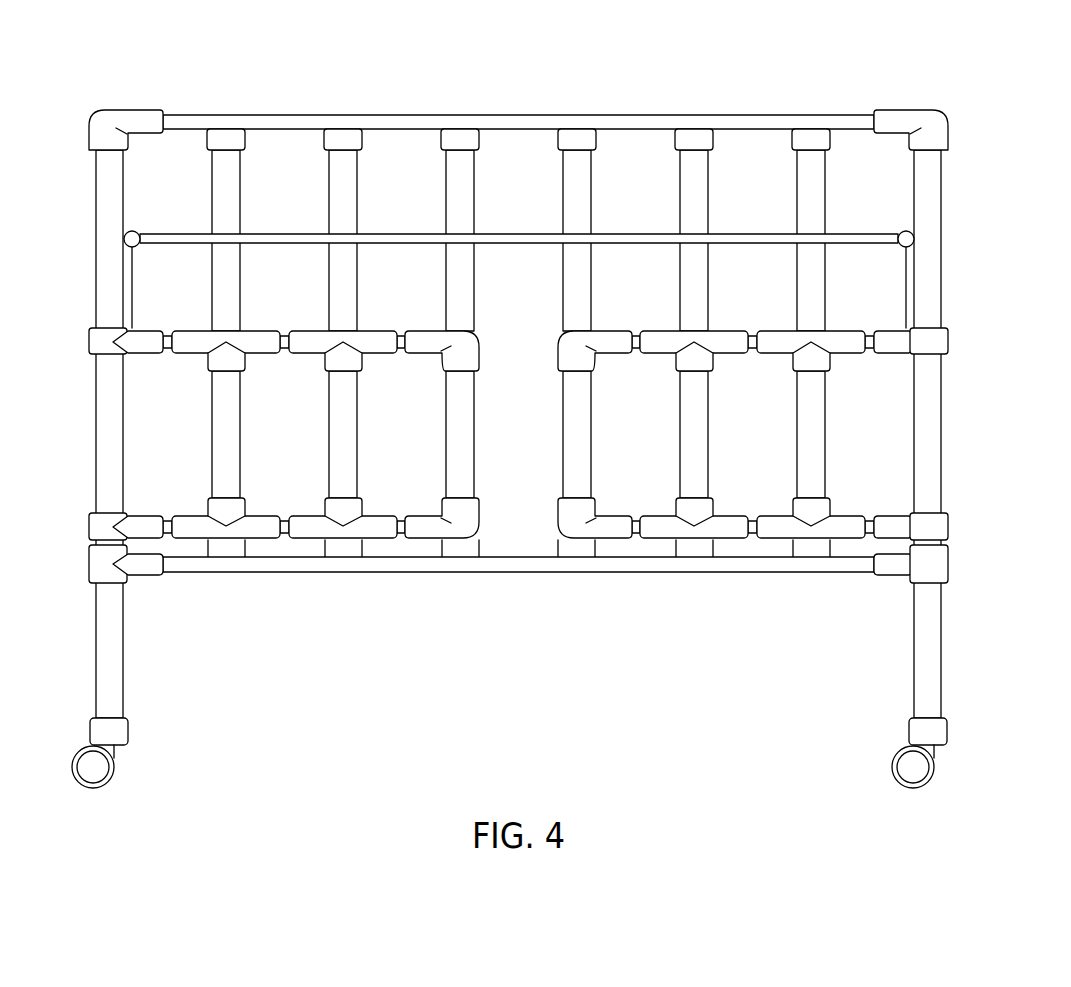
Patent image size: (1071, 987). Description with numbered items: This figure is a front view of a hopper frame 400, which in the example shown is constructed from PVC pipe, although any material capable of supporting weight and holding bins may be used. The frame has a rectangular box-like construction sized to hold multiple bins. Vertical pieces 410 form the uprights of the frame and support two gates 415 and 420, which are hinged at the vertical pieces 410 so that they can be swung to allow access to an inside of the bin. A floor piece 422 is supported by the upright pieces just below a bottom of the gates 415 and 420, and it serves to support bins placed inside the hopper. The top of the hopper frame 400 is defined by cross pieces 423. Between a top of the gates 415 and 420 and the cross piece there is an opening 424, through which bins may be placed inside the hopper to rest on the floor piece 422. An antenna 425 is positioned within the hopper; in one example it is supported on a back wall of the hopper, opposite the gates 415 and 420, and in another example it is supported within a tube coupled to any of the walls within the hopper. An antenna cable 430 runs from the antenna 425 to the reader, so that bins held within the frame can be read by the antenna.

The hopper frame 400 is at (851, 46).
The vertical pieces 410 is at (94, 200).
The gate 415 is at (198, 522).
The gate 420 is at (667, 523).
The floor piece 422 is at (515, 557).
The cross pieces 423 is at (517, 115).
The opening 424 is at (493, 283).
The antenna 425 is at (901, 232).
The antenna cable 430 is at (132, 283).